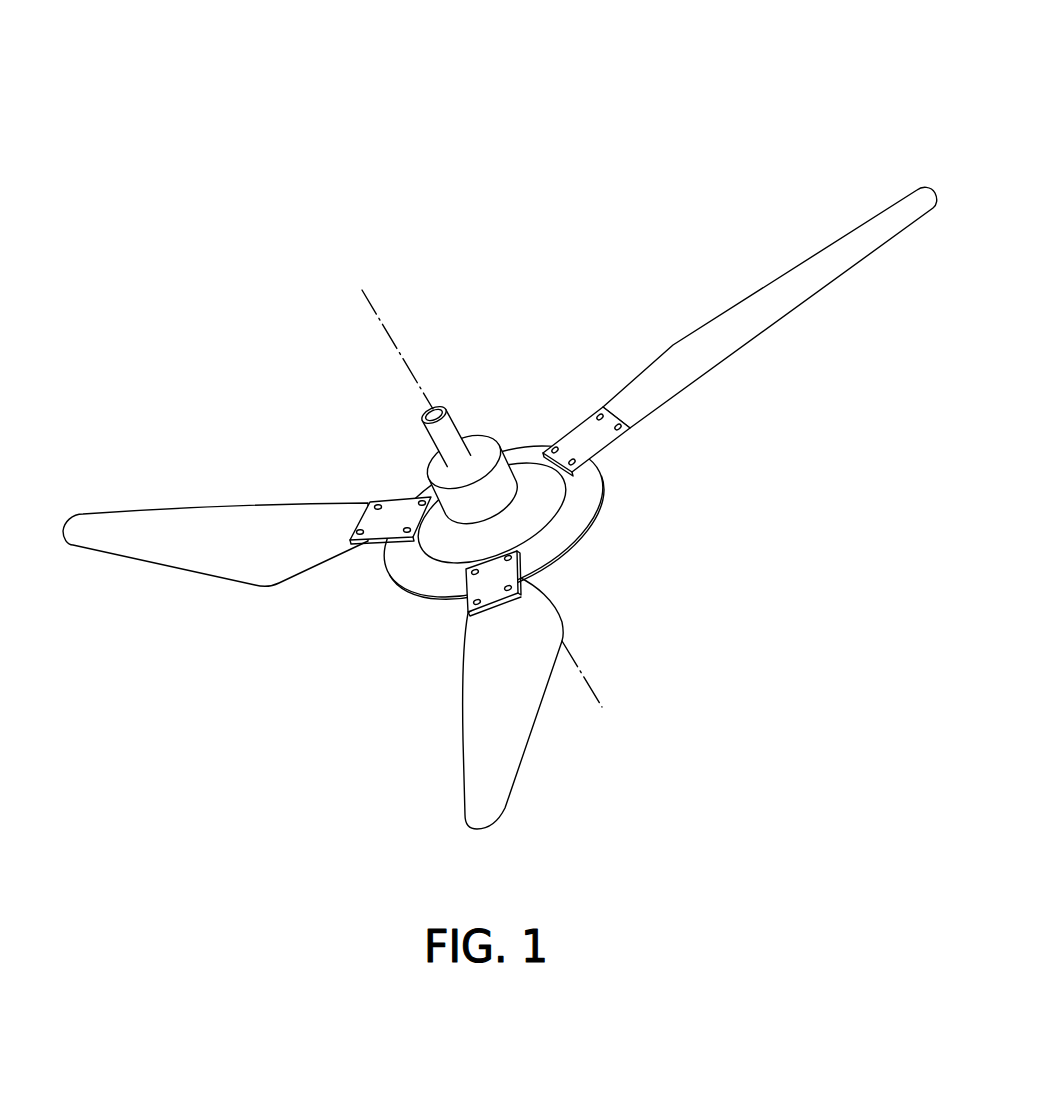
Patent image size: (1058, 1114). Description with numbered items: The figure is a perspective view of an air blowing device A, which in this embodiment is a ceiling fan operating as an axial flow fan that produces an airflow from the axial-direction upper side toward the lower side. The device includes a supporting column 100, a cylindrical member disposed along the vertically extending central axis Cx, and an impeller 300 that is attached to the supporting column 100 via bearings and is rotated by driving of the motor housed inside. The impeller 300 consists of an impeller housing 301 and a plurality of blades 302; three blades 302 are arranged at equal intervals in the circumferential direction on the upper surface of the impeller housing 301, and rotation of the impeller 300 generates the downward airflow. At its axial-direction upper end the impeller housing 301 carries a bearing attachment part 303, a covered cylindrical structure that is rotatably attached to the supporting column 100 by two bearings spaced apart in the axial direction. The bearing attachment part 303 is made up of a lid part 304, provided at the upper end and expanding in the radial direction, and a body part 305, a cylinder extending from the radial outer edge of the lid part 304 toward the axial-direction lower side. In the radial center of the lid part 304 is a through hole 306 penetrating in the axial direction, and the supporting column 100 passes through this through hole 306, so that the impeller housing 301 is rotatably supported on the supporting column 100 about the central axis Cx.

The supporting column 100 is at (437, 437).
The impeller 300 is at (611, 355).
The impeller housing 301 is at (403, 587).
The blades 302 is at (813, 287).
The bearing attachment part 303 is at (463, 445).
The lid part 304 is at (431, 430).
The body part 305 is at (500, 463).
The through hole 306 is at (437, 465).
The air blowing device A is at (470, 186).
The central axis Cx is at (380, 317).